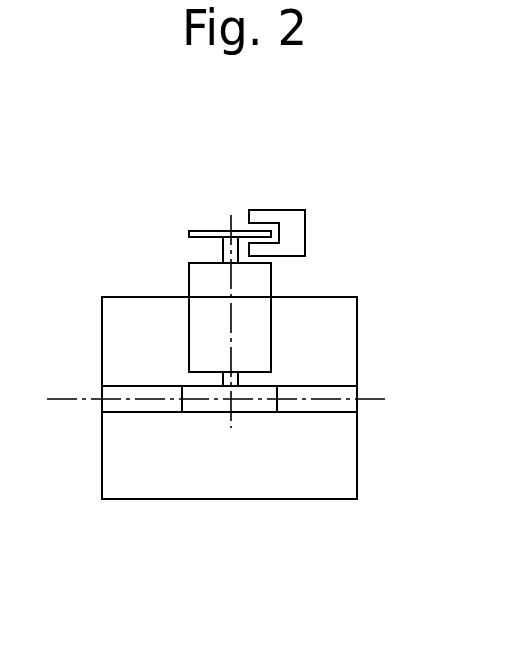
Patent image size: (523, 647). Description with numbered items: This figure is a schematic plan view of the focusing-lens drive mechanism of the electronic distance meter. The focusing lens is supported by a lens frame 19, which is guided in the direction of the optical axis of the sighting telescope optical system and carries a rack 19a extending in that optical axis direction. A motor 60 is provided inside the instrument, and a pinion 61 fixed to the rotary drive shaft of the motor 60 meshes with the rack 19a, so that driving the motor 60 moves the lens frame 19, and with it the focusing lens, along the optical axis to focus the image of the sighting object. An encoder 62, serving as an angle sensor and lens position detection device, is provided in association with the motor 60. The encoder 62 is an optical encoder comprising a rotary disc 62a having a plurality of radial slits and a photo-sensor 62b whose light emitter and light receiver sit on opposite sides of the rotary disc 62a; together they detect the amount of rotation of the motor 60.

The lens frame 19 is at (293, 480).
The rack 19a is at (338, 387).
The pinion 61 is at (205, 407).
The motor 60 is at (255, 278).
The encoder 62 is at (317, 162).
The rotary disc 62a is at (205, 230).
The photo-sensor 62b is at (295, 228).